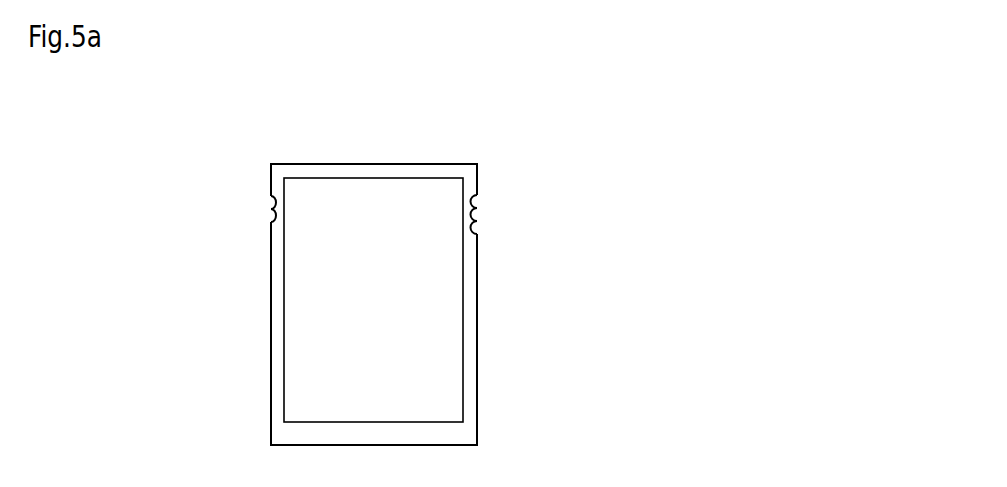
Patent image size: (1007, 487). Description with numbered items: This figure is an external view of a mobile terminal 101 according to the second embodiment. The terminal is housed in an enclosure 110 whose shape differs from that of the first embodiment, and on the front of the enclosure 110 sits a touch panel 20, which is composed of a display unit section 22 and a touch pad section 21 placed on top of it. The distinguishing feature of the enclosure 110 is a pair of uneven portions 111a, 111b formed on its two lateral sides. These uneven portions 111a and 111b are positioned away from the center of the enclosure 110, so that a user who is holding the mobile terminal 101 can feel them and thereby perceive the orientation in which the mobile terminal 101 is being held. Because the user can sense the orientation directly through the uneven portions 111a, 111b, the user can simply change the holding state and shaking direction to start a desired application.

The mobile terminal 101 is at (501, 136).
The enclosure 110 is at (477, 410).
The uneven portions 111a is at (267, 210).
The uneven portions 111b is at (487, 213).
The touch panel 20 is at (773, 282).
The touch pad section 21 is at (440, 302).
The display unit section 22 is at (440, 337).